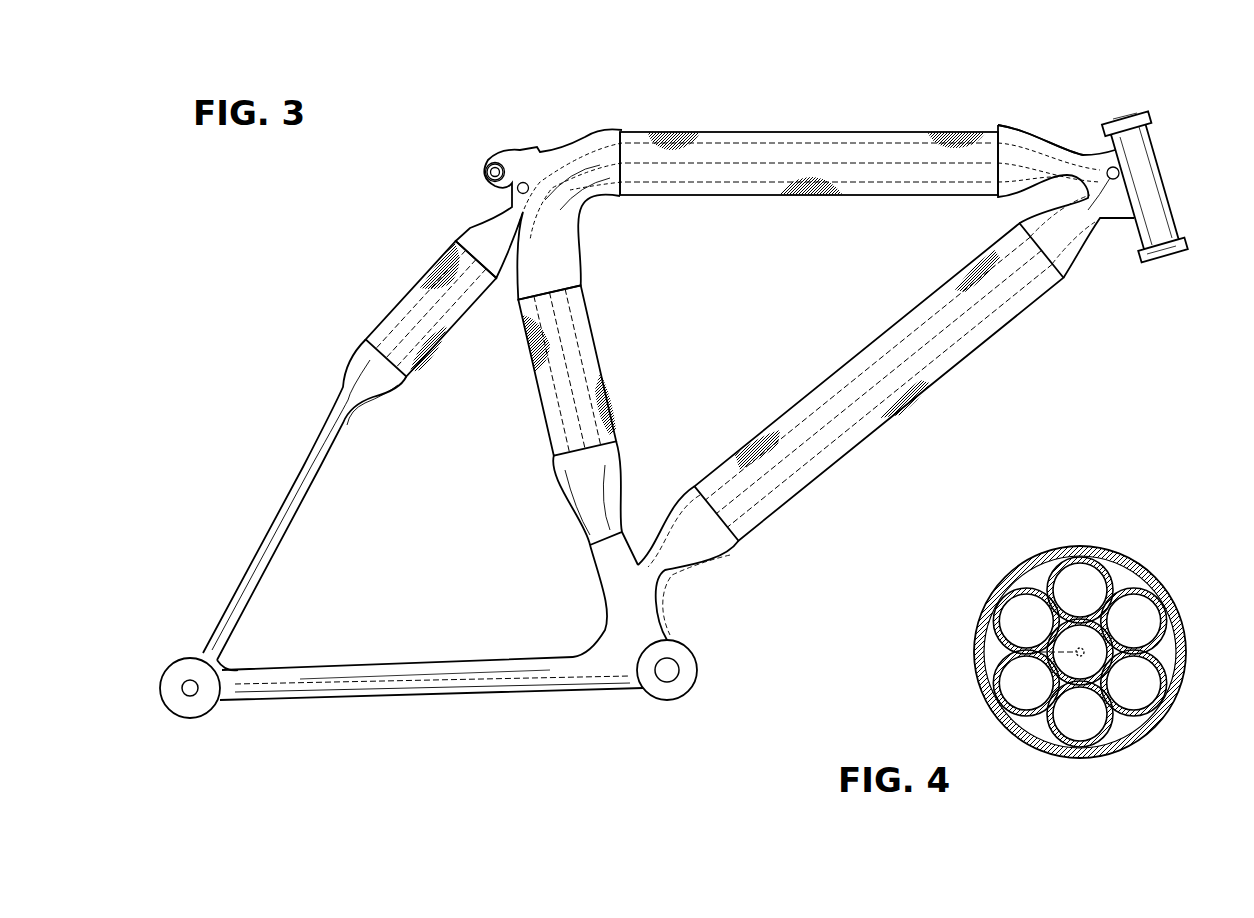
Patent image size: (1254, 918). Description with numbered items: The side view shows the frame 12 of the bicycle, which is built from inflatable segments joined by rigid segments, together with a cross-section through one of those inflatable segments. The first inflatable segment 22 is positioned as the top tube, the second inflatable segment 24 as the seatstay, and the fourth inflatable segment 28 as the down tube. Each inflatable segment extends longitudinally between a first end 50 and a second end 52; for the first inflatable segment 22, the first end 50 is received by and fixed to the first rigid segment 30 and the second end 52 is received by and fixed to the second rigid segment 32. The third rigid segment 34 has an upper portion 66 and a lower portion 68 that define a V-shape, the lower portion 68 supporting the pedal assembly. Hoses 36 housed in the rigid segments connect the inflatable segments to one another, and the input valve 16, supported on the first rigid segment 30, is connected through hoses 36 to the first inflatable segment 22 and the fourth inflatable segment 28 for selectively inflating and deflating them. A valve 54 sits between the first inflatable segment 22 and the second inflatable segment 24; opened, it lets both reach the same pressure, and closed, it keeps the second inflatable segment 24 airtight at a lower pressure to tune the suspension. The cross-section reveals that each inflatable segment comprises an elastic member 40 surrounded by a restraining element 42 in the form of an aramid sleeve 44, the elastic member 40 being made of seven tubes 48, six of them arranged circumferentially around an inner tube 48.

In FIG. 3, the frame 12 is at (1005, 105).
In FIG. 3, the input valve 16 is at (1110, 180).
In FIG. 3, the first inflatable segment 22 is at (843, 132).
In FIG. 3, the second inflatable segment 24 is at (600, 350).
In FIG. 3, the fourth inflatable segment 28 is at (988, 340).
In FIG. 3, the first rigid segment 30 is at (1045, 140).
In FIG. 3, the second rigid segment 32 is at (598, 130).
In FIG. 3, the third rigid segment 34 is at (398, 660).
In FIG. 3, the hoses 36 is at (1083, 158).
In FIG. 4, the hoses 36 is at (987, 690).
In FIG. 3, the elastic member 40 is at (760, 190).
In FIG. 3, the restraining element 42 is at (708, 198).
In FIG. 4, the restraining element 42 is at (1095, 550).
In FIG. 3, the sleeve 44 is at (740, 132).
In FIG. 4, the tubes 48 is at (1045, 597).
In FIG. 3, the first end 50 is at (1000, 125).
In FIG. 3, the second end 52 is at (622, 132).
In FIG. 3, the valve 54 is at (512, 160).
In FIG. 3, the upper portion 66 is at (285, 495).
In FIG. 3, the lower portion 68 is at (410, 690).